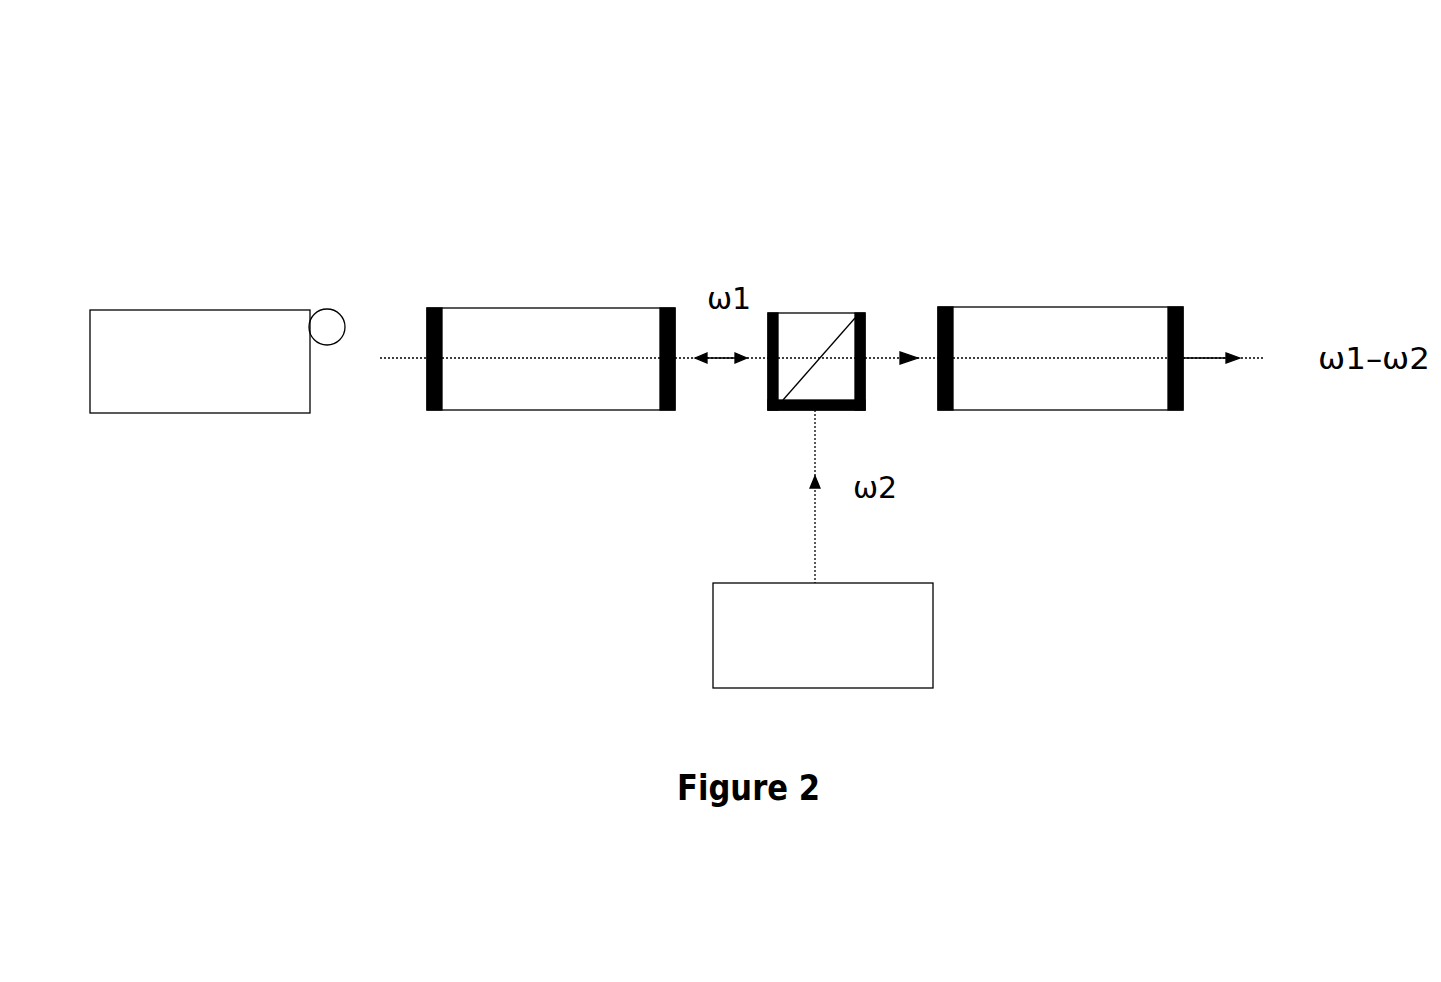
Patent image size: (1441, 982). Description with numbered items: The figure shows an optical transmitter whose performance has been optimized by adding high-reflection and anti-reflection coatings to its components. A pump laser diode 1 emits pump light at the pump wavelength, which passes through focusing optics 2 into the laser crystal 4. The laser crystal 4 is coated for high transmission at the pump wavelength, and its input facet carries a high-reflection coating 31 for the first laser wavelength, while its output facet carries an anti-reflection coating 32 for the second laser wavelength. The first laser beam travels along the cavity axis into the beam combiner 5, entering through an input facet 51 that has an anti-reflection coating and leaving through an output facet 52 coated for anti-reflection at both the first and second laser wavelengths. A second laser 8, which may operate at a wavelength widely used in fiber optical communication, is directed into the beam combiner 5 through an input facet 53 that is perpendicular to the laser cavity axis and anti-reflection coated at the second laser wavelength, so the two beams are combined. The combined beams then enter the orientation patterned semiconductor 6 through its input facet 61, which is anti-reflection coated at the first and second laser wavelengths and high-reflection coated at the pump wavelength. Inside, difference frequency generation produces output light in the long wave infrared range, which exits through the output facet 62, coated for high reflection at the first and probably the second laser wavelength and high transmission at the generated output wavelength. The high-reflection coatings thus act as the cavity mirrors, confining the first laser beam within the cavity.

The pump laser diode 1 is at (202, 300).
The focusing optics 2 is at (327, 298).
The high-reflection coating 31 is at (438, 290).
The laser crystal 4 is at (559, 295).
The anti-reflection coating 32 is at (667, 307).
The beam combiner 5 is at (812, 307).
The input facet 51 is at (776, 307).
The output facet 52 is at (863, 305).
The input facet perpendicular to the laser cavity axis 53 is at (780, 421).
The orientation patterned semiconductor 6 is at (1060, 305).
The input facet 61 is at (949, 305).
The output facet 62 is at (1177, 303).
The second laser 8 is at (700, 650).